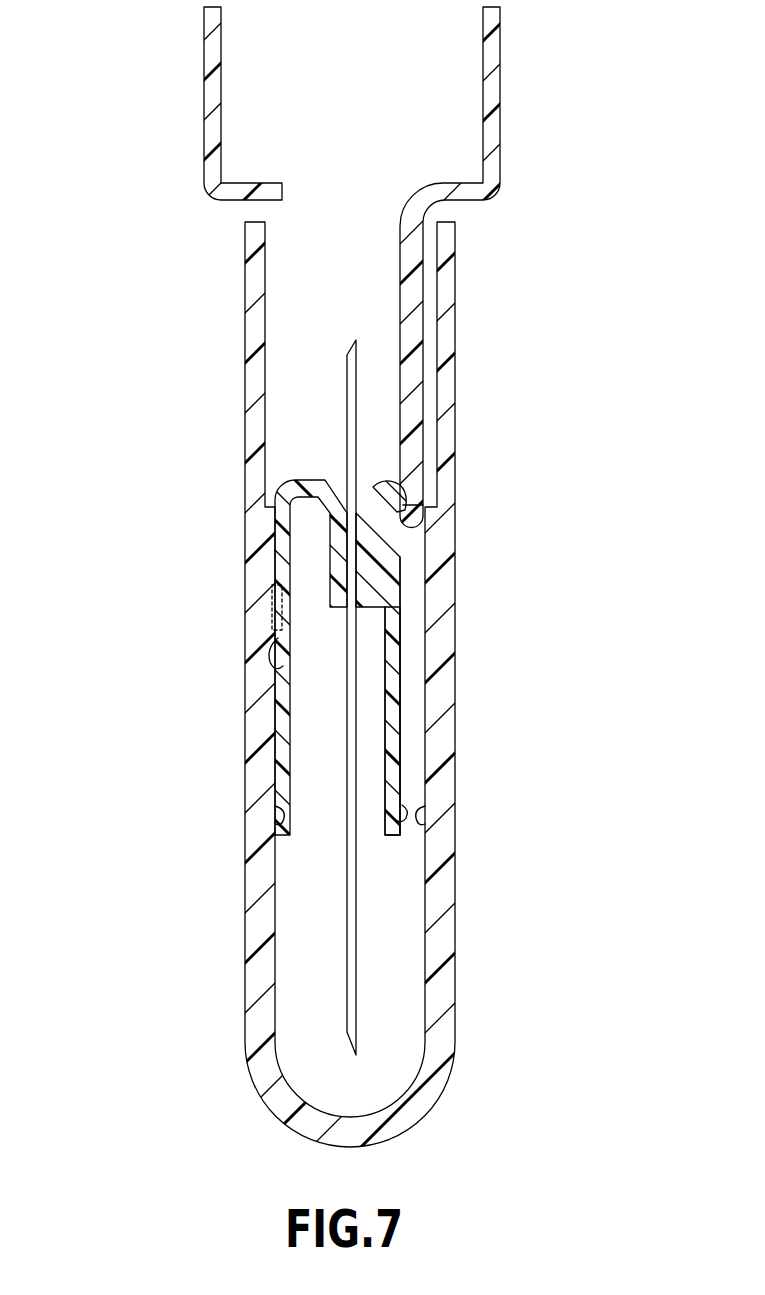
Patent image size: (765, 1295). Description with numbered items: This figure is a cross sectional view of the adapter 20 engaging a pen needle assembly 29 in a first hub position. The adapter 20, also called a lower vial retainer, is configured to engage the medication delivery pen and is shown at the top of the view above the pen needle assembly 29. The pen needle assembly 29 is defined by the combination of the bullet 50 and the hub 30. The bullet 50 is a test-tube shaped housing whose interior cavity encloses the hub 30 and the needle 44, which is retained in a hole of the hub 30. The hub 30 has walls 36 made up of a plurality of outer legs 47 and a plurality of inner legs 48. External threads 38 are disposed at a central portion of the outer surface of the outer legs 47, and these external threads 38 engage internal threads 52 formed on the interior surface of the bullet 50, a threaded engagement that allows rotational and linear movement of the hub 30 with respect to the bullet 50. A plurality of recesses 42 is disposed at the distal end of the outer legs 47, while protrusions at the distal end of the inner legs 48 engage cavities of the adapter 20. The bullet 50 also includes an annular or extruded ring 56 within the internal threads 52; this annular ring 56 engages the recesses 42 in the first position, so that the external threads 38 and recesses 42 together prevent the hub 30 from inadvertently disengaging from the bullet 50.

The adapter 20 is at (500, 78).
The pen needle assembly 29 is at (382, 647).
The hub 30 is at (387, 560).
The walls 36 is at (400, 755).
The external threads 38 is at (273, 662).
The recesses 42 is at (275, 820).
The needle 44 is at (355, 960).
The outer legs 47 is at (275, 752).
The inner legs 48 is at (395, 642).
The bullet 50 is at (245, 937).
The internal threads 52 is at (275, 618).
The annular ring 56 is at (420, 820).